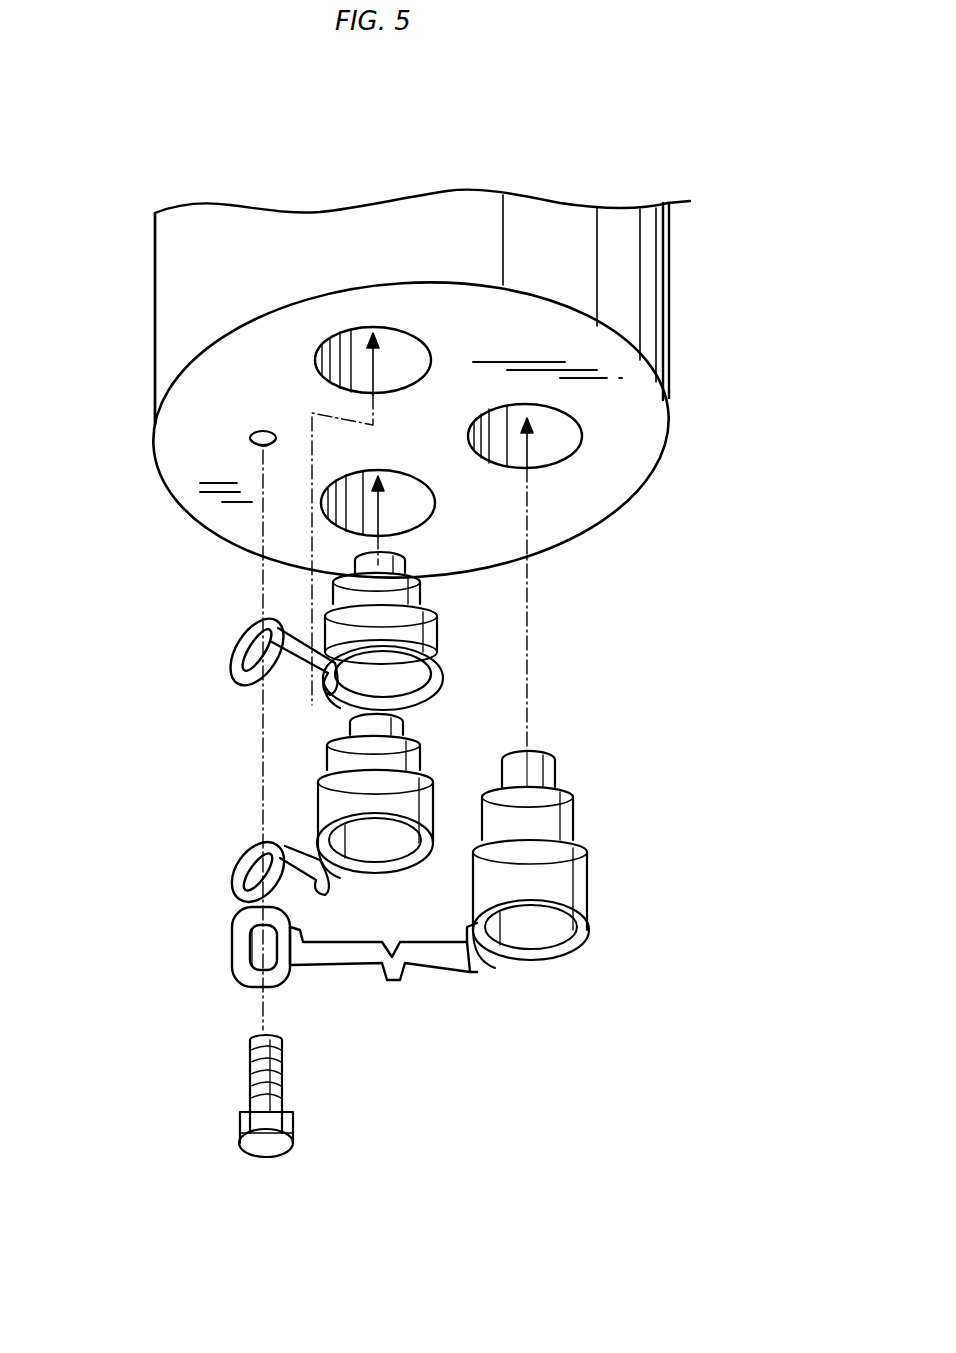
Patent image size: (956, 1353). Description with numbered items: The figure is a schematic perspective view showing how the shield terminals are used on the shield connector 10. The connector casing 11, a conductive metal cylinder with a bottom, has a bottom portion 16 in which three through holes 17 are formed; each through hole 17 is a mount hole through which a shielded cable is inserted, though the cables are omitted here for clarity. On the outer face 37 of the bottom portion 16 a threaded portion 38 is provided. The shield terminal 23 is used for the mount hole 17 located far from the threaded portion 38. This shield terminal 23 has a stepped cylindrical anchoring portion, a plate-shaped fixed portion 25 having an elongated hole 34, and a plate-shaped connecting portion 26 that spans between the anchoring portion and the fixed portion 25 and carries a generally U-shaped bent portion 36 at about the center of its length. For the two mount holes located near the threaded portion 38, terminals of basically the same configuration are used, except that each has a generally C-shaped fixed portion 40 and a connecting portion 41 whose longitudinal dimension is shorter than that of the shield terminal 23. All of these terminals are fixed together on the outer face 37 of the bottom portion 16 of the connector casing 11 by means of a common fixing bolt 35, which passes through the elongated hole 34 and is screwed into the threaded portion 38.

The shield connector 10 is at (623, 198).
The connector casing 11 is at (163, 292).
The bottom portion 16 is at (643, 452).
The through hole 17 is at (403, 343).
The shield terminal 23 is at (540, 976).
The fixed portion 25 is at (240, 962).
The connecting portion 26 is at (440, 970).
The elongated hole 34 is at (232, 938).
The fixing bolt 35 is at (262, 1147).
The bent portion 36 is at (433, 703).
The outer face 37 is at (627, 483).
The threaded portion 38 is at (253, 447).
The fixed portion 40 is at (232, 642).
The connecting portion 41 is at (310, 683).